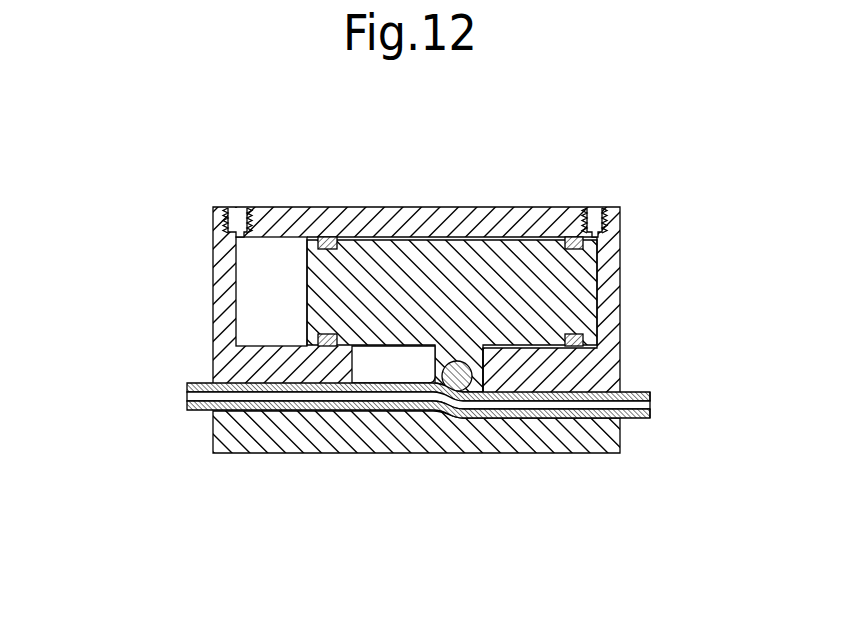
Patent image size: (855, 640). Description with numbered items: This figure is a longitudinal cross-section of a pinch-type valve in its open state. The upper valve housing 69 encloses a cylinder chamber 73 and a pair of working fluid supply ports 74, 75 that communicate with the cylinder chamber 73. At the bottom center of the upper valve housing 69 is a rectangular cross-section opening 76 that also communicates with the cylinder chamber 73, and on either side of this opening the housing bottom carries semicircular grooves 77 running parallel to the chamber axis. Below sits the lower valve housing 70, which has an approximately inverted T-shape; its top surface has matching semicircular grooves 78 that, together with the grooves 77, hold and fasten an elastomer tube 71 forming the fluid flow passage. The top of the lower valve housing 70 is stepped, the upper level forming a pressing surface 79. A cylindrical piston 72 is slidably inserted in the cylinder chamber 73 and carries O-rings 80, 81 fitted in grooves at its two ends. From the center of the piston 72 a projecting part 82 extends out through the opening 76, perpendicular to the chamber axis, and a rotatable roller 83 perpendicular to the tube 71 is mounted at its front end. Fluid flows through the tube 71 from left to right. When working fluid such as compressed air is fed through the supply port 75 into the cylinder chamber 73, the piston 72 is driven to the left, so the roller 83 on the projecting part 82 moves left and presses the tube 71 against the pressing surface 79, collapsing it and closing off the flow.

The upper valve housing 69 is at (612, 260).
The lower valve housing 70 is at (237, 440).
The elastomer tube 71 is at (645, 388).
The piston 72 is at (380, 287).
The cylinder chamber 73 is at (292, 258).
The working fluid supply port 74 is at (235, 217).
The working fluid supply port 75 is at (600, 206).
The opening 76 is at (387, 366).
The grooves 77 is at (213, 362).
The grooves 78 is at (212, 414).
The pressing surface 79 is at (432, 393).
The O-ring 80 is at (323, 240).
The O-ring 81 is at (568, 237).
The projecting part 82 is at (392, 383).
The roller 83 is at (485, 397).